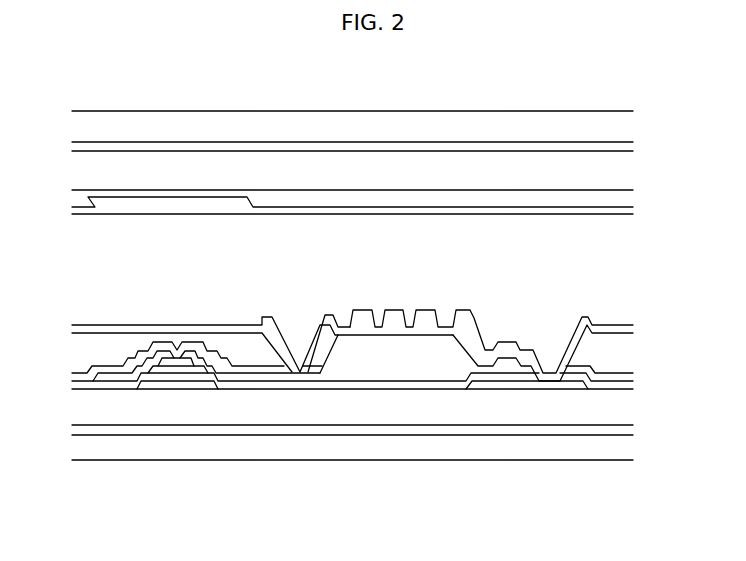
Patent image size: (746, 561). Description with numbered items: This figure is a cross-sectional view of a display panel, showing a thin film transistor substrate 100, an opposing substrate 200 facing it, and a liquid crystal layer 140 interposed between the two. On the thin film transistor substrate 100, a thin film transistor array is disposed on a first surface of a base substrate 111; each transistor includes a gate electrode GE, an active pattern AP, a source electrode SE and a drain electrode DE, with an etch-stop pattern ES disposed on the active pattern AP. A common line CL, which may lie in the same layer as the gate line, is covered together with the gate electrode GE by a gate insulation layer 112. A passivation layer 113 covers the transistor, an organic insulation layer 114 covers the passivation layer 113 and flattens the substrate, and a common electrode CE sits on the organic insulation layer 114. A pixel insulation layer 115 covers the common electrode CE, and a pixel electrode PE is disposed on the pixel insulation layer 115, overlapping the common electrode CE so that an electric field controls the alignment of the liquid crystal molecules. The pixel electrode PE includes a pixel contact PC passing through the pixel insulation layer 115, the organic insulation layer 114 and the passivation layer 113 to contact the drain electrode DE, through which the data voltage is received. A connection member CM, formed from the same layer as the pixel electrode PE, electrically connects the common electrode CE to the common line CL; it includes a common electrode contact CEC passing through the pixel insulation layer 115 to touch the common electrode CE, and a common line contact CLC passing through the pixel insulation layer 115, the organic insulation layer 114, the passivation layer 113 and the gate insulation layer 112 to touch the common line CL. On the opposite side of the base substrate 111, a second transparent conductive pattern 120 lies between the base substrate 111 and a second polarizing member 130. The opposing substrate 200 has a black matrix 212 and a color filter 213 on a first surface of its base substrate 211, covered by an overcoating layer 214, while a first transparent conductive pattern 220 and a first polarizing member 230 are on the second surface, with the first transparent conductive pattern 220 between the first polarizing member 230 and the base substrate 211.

The opposing substrate 200 is at (375, 167).
The first polarizing member 230 is at (627, 125).
The first transparent conductive pattern 220 is at (627, 147).
The base substrate 211 is at (627, 170).
The color filter 213 is at (627, 197).
The black matrix 212 is at (88, 194).
The overcoating layer 214 is at (380, 214).
The liquid crystal layer 140 is at (82, 270).
The thin film transistor substrate 100 is at (401, 421).
The pixel insulation layer 115 is at (627, 330).
The organic insulation layer 114 is at (627, 352).
The passivation layer 113 is at (627, 378).
The gate insulation layer 112 is at (627, 390).
The base substrate 111 is at (627, 408).
The second transparent conductive pattern 120 is at (627, 429).
The second polarizing member 130 is at (627, 447).
The source electrode SE is at (108, 377).
The active pattern AP is at (151, 368).
The gate electrode GE is at (178, 384).
The etch-stop pattern ES is at (188, 362).
The drain electrode DE is at (235, 378).
The pixel electrode PE is at (266, 328).
The pixel contact PC is at (295, 370).
The common electrode CE is at (393, 328).
The common electrode contact CEC is at (497, 345).
The common line contact CLC is at (548, 378).
The common line CL is at (578, 385).
The connection member CM is at (532, 424).